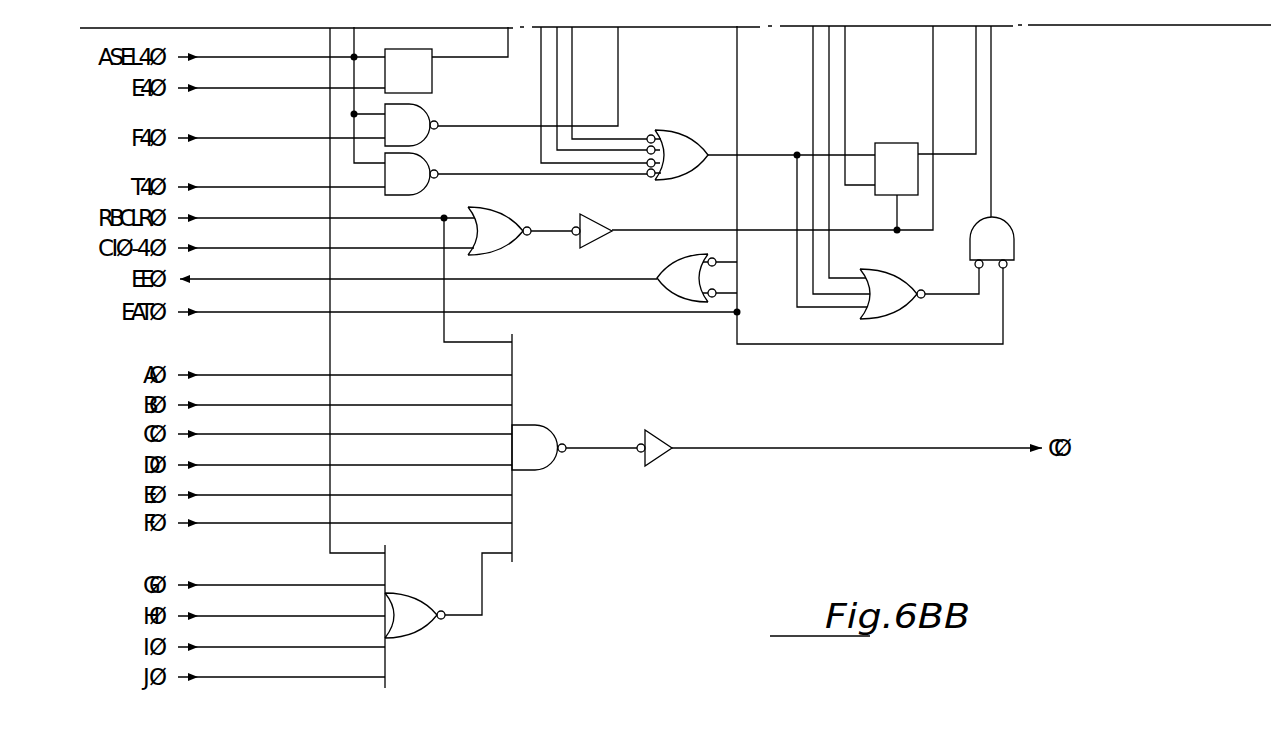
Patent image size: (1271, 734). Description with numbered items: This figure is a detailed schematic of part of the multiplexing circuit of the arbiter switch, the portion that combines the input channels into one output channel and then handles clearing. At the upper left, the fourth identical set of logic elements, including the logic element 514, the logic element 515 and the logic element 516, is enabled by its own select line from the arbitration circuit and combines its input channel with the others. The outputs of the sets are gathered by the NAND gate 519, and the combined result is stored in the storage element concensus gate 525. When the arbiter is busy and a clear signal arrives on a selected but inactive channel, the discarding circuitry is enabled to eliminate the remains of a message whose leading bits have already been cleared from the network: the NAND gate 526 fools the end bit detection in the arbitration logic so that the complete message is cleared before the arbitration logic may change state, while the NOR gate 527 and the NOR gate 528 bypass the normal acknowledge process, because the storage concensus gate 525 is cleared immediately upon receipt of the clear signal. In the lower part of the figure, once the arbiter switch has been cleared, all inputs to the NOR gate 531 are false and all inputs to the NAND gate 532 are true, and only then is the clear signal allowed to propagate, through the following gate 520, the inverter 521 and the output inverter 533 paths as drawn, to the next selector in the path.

The logic element 514 is at (432, 80).
The logic element 515 is at (427, 121).
The logic element 516 is at (426, 167).
The NAND gate 519 is at (677, 134).
The NOR gate 520 is at (502, 223).
The inverter 521 is at (598, 224).
The storage element concensus gate 525 is at (895, 142).
The NAND gate 526 is at (670, 267).
The NOR gate 527 is at (895, 301).
The NOR gate 528 is at (1006, 240).
The NOR gate 531 is at (425, 620).
The NAND gate 532 is at (538, 433).
The inverter 533 is at (657, 434).